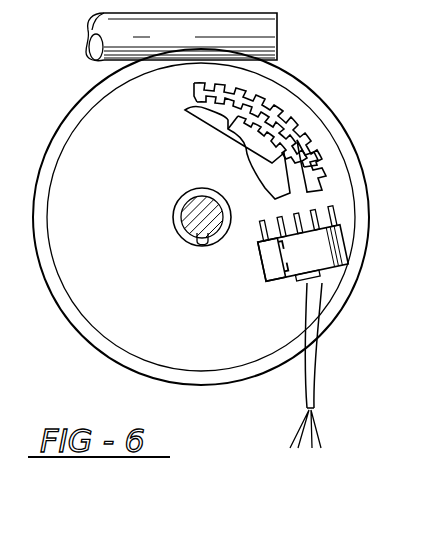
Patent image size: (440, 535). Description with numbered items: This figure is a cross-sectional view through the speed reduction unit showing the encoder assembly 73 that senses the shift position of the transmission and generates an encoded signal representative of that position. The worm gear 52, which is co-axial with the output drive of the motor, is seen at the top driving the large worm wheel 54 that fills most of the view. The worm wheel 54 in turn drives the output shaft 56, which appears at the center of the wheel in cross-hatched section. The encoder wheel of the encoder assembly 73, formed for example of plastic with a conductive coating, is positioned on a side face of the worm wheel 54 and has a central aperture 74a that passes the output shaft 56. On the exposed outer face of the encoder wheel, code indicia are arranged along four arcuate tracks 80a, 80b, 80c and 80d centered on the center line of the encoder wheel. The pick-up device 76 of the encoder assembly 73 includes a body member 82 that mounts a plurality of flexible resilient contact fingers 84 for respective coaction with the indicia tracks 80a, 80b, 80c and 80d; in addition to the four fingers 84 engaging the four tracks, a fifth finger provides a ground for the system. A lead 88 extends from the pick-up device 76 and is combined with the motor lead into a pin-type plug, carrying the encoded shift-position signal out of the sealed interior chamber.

The worm gear 52 is at (277, 36).
The worm wheel 54 is at (325, 97).
The encoder assembly 73 is at (359, 163).
The output shaft 56 is at (190, 208).
The central aperture 74a is at (196, 244).
The arcuate track 80a is at (197, 89).
The arcuate track 80b is at (198, 106).
The arcuate track 80c is at (215, 125).
The arcuate track 80d is at (245, 152).
The pick-up device 76 is at (329, 252).
The body member 82 is at (252, 266).
The contact fingers 84 is at (337, 215).
The lead 88 is at (320, 350).